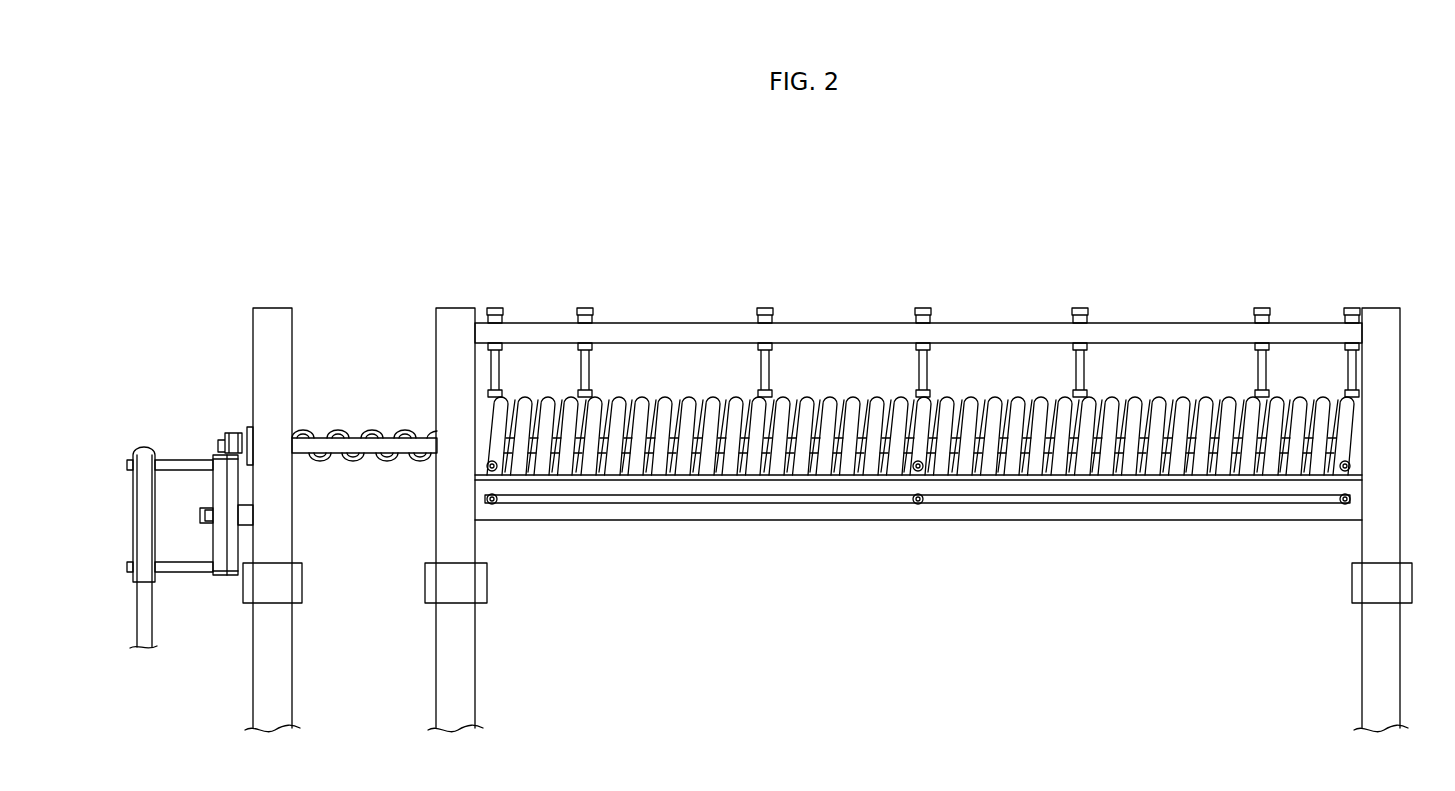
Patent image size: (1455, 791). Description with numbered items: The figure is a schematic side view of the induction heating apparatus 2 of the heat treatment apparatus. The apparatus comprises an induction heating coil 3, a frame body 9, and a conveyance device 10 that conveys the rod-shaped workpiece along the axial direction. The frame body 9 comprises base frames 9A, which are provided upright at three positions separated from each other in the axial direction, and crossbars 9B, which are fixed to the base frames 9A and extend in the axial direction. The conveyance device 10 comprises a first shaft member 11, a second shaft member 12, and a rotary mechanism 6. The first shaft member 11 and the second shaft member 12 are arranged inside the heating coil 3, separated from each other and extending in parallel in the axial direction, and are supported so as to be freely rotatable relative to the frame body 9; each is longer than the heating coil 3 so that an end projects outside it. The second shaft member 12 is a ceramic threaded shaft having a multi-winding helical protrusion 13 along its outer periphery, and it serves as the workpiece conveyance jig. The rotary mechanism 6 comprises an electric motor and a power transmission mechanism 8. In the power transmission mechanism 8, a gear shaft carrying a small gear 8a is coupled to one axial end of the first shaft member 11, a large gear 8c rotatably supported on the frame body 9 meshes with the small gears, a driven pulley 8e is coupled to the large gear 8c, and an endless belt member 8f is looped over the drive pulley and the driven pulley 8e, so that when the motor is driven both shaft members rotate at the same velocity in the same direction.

The induction heating apparatus 2 is at (1195, 234).
The induction heating coil 3 is at (991, 395).
The rotary mechanism 6 is at (192, 408).
The power transmission mechanism 8 is at (125, 449).
The small gear 8a is at (233, 444).
The large gear 8c is at (222, 578).
The driven pulley 8e is at (135, 511).
The endless belt member 8f is at (141, 447).
The frame body 9 is at (1423, 360).
The base frame 9A is at (272, 325).
The crossbar 9B is at (845, 330).
The conveyance device 10 is at (377, 385).
The first shaft member 11 is at (338, 456).
The second shaft member 12 is at (324, 436).
The helical protrusion 13 is at (405, 432).